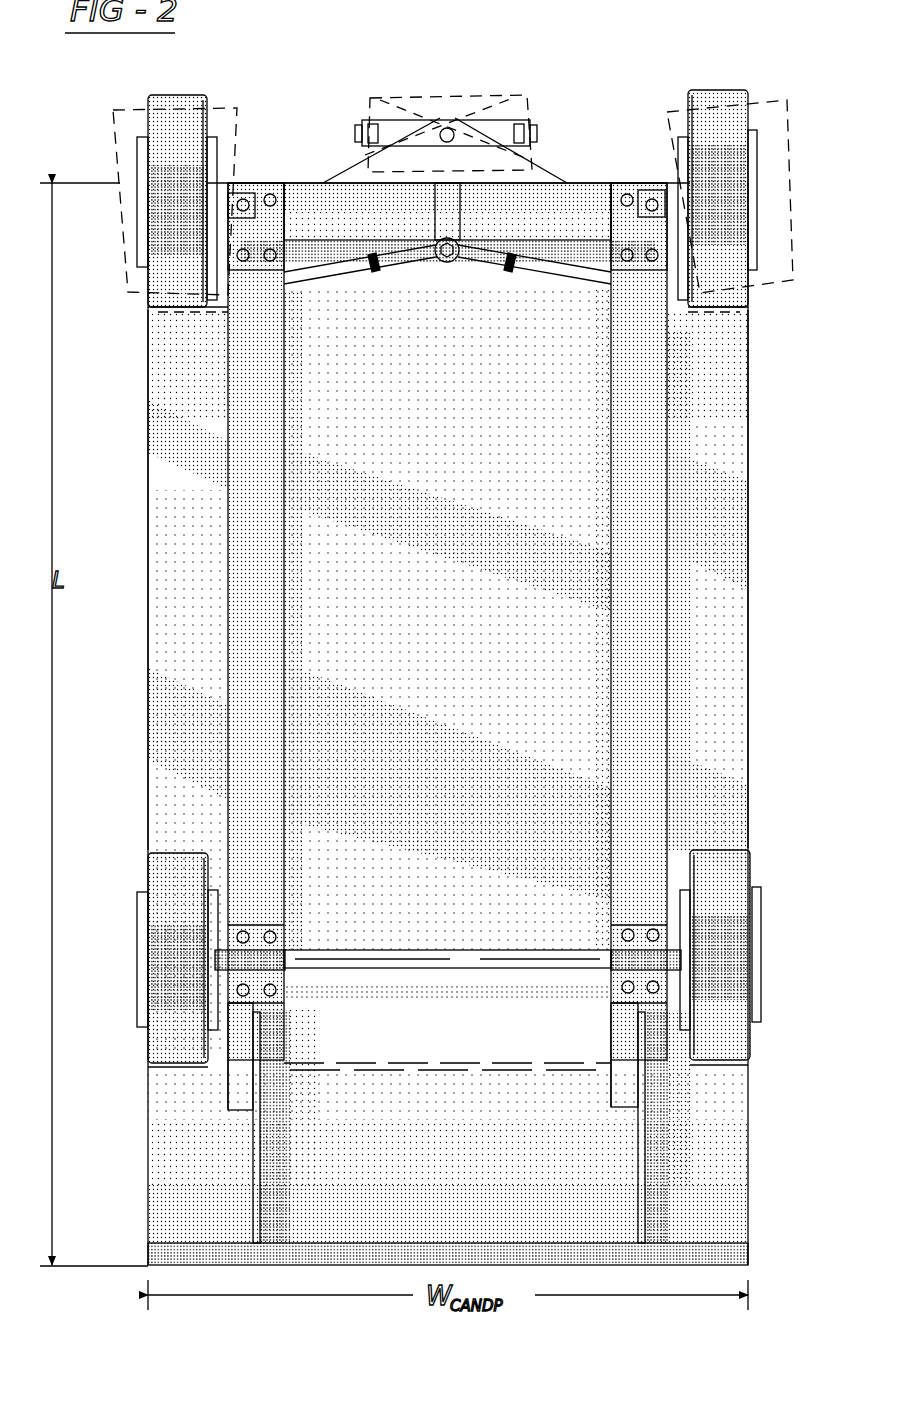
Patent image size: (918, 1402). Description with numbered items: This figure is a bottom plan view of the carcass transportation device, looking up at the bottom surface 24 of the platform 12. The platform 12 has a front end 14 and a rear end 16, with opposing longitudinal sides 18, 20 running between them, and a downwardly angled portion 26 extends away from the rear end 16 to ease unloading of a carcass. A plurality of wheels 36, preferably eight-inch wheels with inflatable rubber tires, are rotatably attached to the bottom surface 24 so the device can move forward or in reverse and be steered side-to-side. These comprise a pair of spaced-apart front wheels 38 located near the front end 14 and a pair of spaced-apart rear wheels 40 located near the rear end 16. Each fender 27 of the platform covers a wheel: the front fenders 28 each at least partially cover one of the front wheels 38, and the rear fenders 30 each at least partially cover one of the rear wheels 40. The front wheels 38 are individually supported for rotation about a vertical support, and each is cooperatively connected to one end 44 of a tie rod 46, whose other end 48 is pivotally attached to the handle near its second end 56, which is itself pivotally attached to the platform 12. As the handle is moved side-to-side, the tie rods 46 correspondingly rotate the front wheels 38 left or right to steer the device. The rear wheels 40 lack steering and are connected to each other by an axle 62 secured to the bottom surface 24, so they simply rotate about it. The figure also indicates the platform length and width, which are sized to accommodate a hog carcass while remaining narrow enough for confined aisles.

The platform 12 is at (727, 390).
The front end 14 is at (620, 170).
The rear end 16 is at (448, 1075).
The longitudinal side 18 is at (144, 470).
The longitudinal side 20 is at (760, 560).
The bottom surface 24 is at (463, 597).
The downwardly angled portion 26 is at (185, 1163).
The fender 27 is at (222, 215).
The front fenders 28 is at (700, 300).
The rear fenders 30 is at (668, 930).
The wheel 36 is at (172, 107).
The front wheels 38 is at (718, 297).
The rear wheels 40 is at (712, 900).
The tie rod end 44 is at (212, 276).
The tie rod 46 is at (568, 276).
The tie rod other end 48 is at (490, 268).
The second end 56 is at (460, 110).
The axle 62 is at (460, 951).